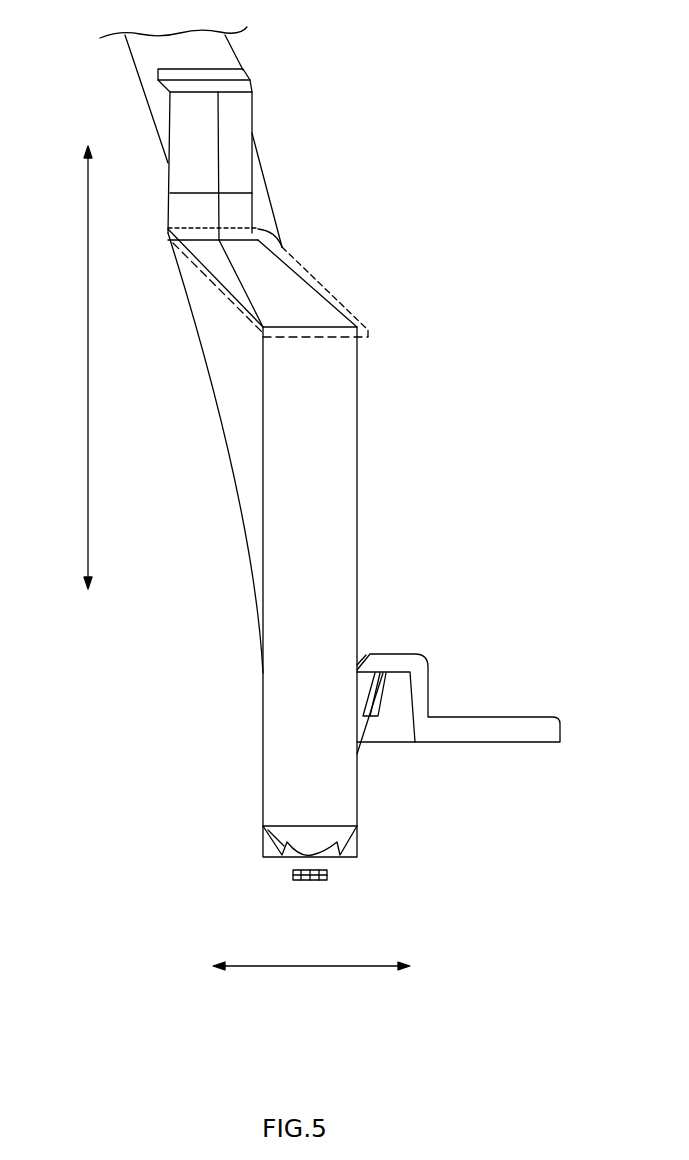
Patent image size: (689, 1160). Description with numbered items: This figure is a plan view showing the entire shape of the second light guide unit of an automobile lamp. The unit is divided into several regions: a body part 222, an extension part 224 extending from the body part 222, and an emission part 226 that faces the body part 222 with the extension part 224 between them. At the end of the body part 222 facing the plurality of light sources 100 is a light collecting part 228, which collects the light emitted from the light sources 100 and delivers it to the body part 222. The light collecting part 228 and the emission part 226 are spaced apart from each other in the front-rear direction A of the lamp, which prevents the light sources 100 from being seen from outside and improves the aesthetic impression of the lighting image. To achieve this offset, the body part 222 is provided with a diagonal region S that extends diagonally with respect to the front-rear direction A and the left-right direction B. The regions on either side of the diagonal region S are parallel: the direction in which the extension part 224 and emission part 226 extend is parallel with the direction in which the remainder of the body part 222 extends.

The emission part 226 is at (246, 79).
The extension part 224 is at (236, 135).
The diagonal region S is at (310, 272).
The body part 222 is at (338, 521).
The light collecting part 228 is at (280, 833).
The light sources 100 is at (310, 882).
The front-rear direction A is at (87, 366).
The left-right direction B is at (312, 968).